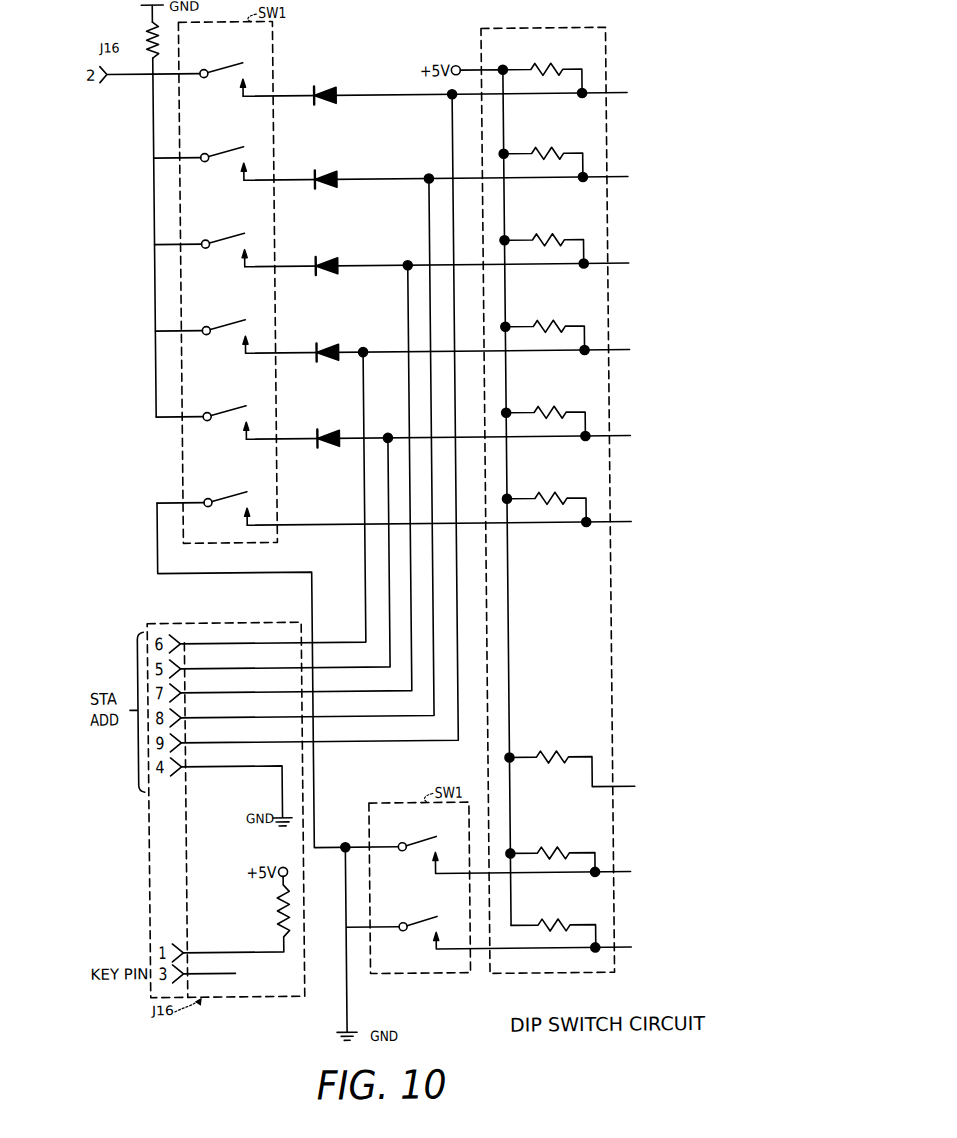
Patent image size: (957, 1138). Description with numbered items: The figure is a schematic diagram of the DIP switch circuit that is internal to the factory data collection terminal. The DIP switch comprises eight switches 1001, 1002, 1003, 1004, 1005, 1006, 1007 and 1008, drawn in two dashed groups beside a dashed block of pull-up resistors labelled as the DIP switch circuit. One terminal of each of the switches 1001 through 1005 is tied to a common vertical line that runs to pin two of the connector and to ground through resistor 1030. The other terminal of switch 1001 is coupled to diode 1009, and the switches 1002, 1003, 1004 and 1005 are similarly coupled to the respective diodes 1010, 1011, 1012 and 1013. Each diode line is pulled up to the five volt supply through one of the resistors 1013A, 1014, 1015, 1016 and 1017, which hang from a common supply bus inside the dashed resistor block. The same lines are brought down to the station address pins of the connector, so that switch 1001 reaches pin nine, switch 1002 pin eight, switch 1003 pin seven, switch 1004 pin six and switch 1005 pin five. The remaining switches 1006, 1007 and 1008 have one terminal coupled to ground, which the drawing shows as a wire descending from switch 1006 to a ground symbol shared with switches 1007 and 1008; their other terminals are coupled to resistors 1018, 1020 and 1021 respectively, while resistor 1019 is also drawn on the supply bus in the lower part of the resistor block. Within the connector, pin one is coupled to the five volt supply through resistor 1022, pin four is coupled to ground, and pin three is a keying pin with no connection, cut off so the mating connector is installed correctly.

The switch 1001 is at (233, 58).
The switch 1002 is at (233, 142).
The switch 1003 is at (232, 228).
The switch 1004 is at (232, 315).
The switch 1005 is at (232, 401).
The switch 1006 is at (231, 487).
The switch 1007 is at (418, 831).
The switch 1008 is at (418, 912).
The diode 1009 is at (321, 85).
The diode 1010 is at (322, 169).
The diode 1011 is at (322, 256).
The diode 1012 is at (322, 342).
The diode 1013 is at (329, 428).
The resistor 1013A is at (552, 66).
The resistor 1014 is at (552, 150).
The resistor 1015 is at (552, 236).
The resistor 1016 is at (552, 322).
The resistor 1017 is at (552, 408).
The resistor 1018 is at (552, 494).
The resistor 1019 is at (550, 753).
The resistor 1020 is at (550, 849).
The resistor 1021 is at (550, 921).
The resistor 1022 is at (271, 913).
The resistor 1030 is at (151, 39).